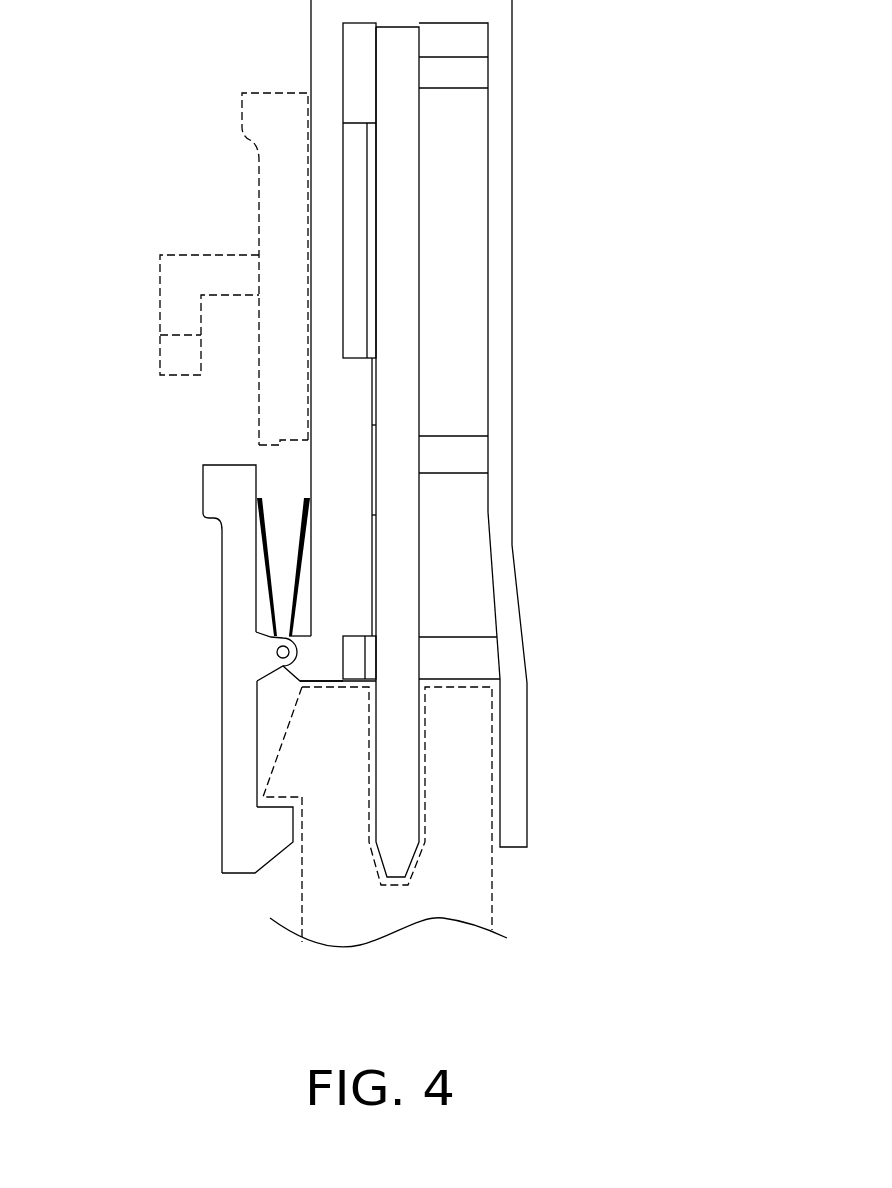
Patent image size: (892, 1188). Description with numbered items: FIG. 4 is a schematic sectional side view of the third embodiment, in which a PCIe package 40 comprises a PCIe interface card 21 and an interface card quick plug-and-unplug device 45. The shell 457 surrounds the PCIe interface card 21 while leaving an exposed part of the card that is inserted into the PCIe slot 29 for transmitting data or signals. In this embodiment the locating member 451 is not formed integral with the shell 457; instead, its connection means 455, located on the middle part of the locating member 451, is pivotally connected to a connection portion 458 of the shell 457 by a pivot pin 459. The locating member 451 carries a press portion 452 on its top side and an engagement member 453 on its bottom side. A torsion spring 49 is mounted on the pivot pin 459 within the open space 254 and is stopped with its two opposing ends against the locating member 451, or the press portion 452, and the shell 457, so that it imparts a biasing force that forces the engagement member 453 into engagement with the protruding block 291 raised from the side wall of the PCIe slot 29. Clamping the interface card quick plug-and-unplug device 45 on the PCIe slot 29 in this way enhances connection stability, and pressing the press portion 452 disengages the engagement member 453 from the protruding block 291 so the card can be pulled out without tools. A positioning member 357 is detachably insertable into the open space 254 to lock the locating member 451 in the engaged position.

The PCIe package 40 is at (168, 52).
The positioning member 357 is at (273, 206).
The open space 254 is at (270, 472).
The press portion 452 is at (210, 494).
The torsion spring 49 is at (262, 578).
The locating member 451 is at (228, 584).
The pivot pin 459 is at (278, 647).
The connection means 455 is at (248, 660).
The interface card quick plug-and-unplug device 45 is at (242, 669).
The connection portion 458 is at (314, 657).
The protruding block 291 is at (290, 773).
The engagement member 453 is at (262, 838).
The shell 457 is at (505, 283).
The PCIe interface card 21 is at (405, 528).
The PCIe slot 29 is at (485, 891).